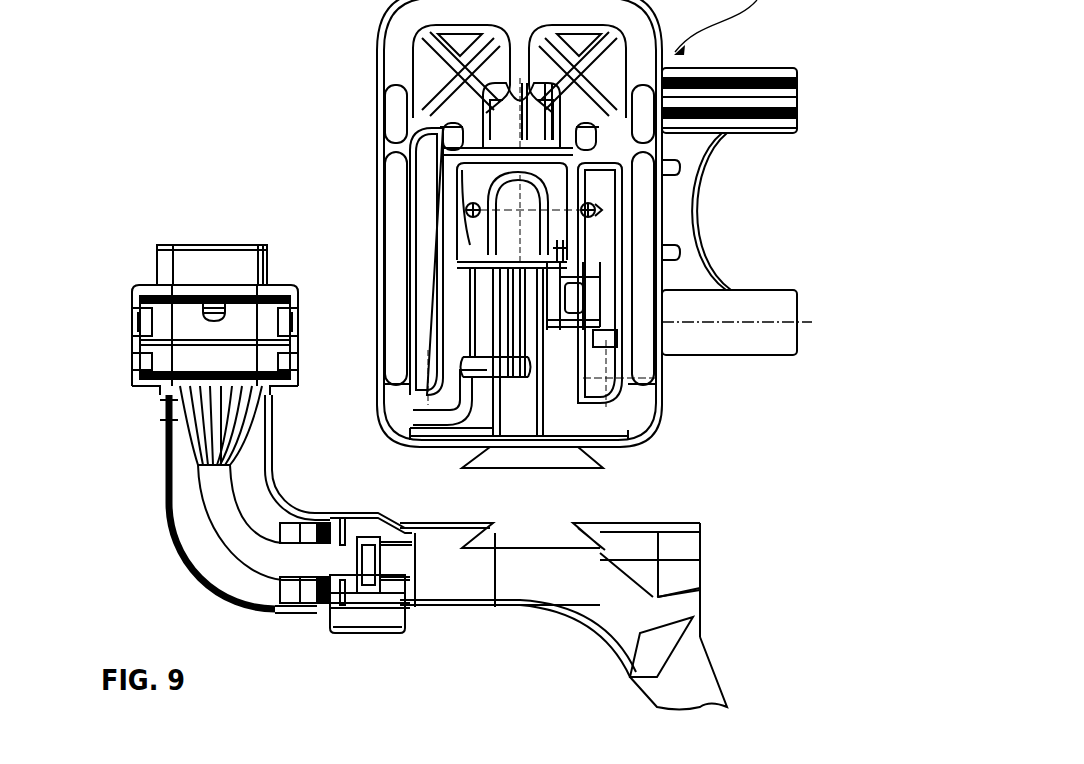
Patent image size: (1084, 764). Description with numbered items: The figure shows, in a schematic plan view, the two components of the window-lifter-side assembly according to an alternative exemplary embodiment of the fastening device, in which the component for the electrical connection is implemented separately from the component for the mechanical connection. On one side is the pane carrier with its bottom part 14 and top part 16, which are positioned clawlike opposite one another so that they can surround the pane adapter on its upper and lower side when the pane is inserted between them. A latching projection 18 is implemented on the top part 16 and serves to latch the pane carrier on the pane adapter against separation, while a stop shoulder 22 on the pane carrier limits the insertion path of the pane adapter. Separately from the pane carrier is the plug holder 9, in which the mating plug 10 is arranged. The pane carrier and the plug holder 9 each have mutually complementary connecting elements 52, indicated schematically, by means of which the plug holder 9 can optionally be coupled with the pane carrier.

The plug holder 9 is at (165, 457).
The mating plug 10 is at (188, 358).
The bottom part 14 is at (440, 208).
The top part 16 is at (376, 166).
The latching projection 18 is at (533, 112).
The stop shoulder 22 is at (560, 244).
The connecting elements 52 is at (573, 516).